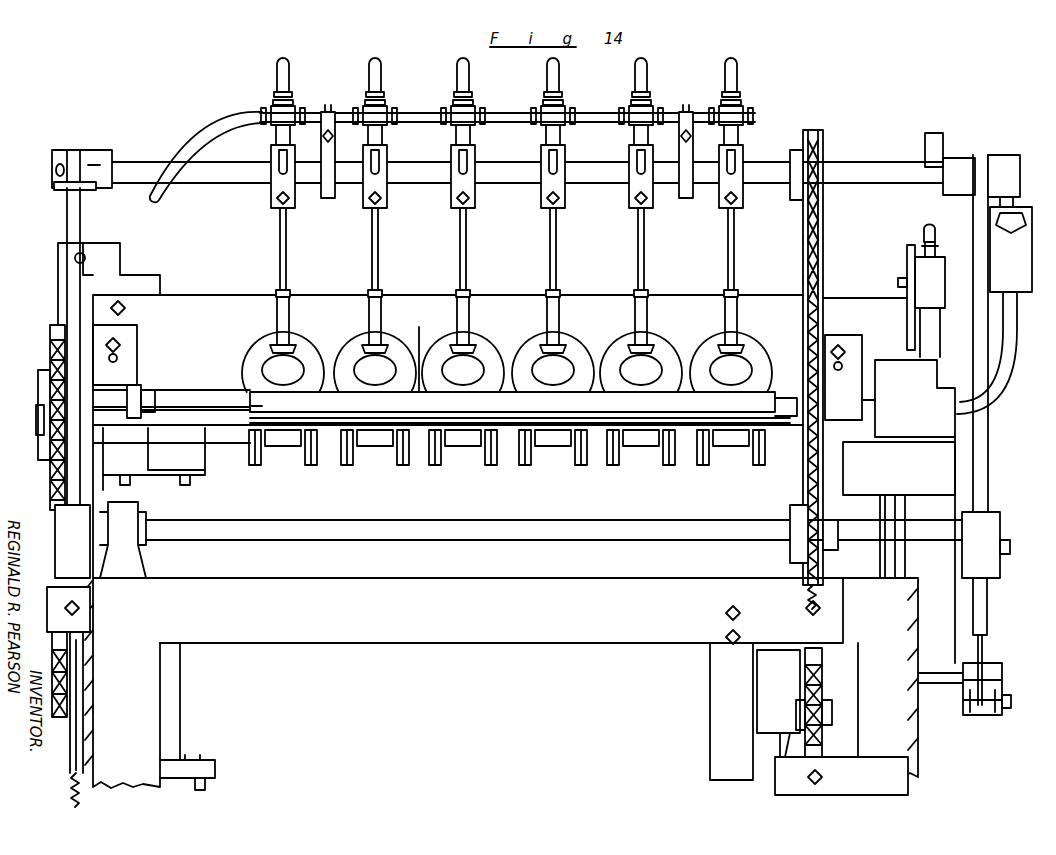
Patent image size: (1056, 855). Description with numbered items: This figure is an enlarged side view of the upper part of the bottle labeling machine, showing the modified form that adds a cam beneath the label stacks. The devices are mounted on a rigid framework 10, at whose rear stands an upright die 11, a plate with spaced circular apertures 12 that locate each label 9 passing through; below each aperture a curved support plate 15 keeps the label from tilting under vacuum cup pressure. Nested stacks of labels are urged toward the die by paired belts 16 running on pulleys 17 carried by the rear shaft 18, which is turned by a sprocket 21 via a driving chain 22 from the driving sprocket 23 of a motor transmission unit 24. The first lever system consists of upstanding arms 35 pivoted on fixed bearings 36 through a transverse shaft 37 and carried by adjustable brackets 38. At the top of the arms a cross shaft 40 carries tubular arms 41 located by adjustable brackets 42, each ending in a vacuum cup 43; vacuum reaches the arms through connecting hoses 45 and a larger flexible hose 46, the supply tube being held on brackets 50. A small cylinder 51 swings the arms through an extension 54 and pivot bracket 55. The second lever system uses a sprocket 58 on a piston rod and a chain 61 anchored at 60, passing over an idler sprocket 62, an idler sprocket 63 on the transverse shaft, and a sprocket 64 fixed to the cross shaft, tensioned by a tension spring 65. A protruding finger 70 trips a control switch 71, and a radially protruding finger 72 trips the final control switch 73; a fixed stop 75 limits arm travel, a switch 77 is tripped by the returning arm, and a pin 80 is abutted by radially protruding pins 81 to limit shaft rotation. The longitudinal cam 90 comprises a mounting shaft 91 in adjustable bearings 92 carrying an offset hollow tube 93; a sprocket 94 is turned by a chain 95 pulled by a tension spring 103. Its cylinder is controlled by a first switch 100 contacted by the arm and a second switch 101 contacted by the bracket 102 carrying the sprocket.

The label 9 is at (312, 354).
The framework 10 is at (303, 648).
The die 11 is at (187, 335).
The aperture 12 is at (247, 357).
The curved support plate 15 is at (468, 253).
The belt 16 is at (298, 466).
The pulley 17 is at (294, 454).
The rear shaft 18 is at (36, 422).
The sprocket 21 is at (50, 452).
The driving chain 22 is at (50, 476).
The driving sprocket 23 is at (63, 722).
The motor transmission unit 24 is at (176, 672).
The upstanding arm 35 is at (68, 235).
The fixed bearing 36 is at (126, 568).
The transverse shaft 37 is at (224, 530).
The adjustable bracket 38 is at (82, 541).
The cross shaft 40 is at (866, 172).
The tubular arm 41 is at (287, 238).
The adjustable bracket 42 is at (272, 153).
The vacuum cup 43 is at (270, 345).
The connecting hose 45 is at (277, 62).
The flexible hose 46 is at (192, 132).
The bracket 50 is at (328, 198).
The small cylinder 51 is at (962, 690).
The extension 54 is at (986, 652).
The pivot bracket 55 is at (1005, 703).
The sprocket 58 is at (805, 718).
The chain anchor 60 is at (810, 786).
The chain 61 is at (826, 262).
The idler sprocket 62 is at (805, 687).
The idler sprocket 63 is at (790, 513).
The sprocket 64 is at (825, 137).
The tension spring 65 is at (803, 572).
The protruding finger 70 is at (935, 133).
The control switch 71 is at (918, 268).
The radially protruding finger 72 is at (1012, 176).
The final control switch 73 is at (1019, 261).
The fixed stop 75 is at (50, 609).
The switch 77 is at (905, 381).
The pin 80 is at (58, 192).
The radially protruding pin 81 is at (56, 172).
The longitudinal cam 90 is at (766, 394).
The mounting shaft 91 is at (183, 400).
The adjustable bearing 92 is at (140, 388).
The hollow tube 93 is at (411, 357).
The sprocket 94 is at (115, 343).
The chain 95 is at (52, 391).
The first switch 100 is at (90, 252).
The second switch 101 is at (764, 770).
The bracket 102 is at (792, 755).
The tension spring 103 is at (70, 791).